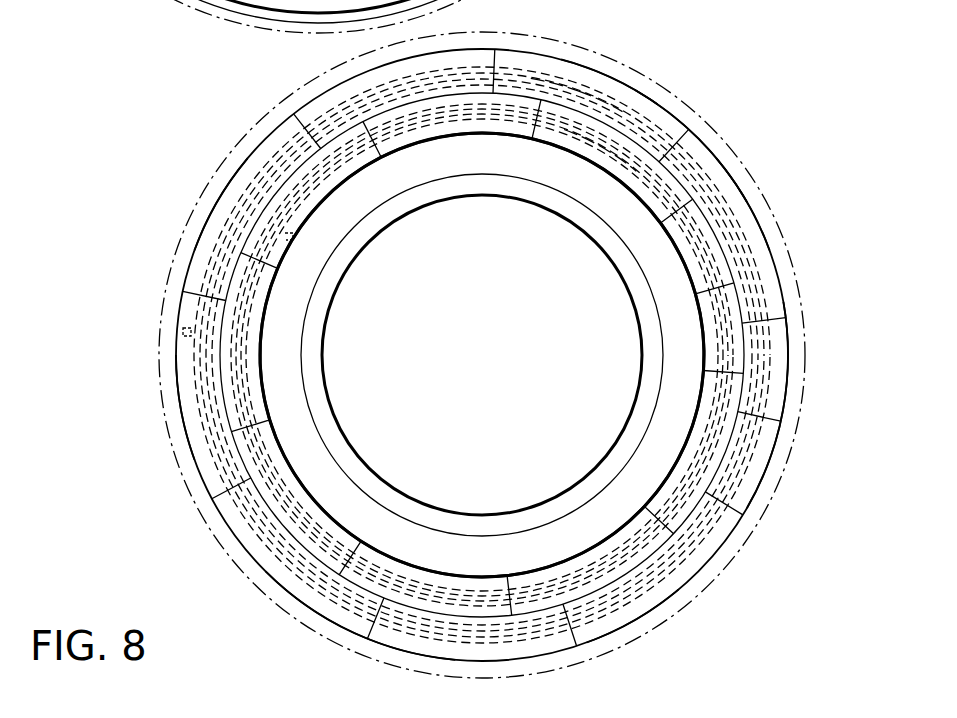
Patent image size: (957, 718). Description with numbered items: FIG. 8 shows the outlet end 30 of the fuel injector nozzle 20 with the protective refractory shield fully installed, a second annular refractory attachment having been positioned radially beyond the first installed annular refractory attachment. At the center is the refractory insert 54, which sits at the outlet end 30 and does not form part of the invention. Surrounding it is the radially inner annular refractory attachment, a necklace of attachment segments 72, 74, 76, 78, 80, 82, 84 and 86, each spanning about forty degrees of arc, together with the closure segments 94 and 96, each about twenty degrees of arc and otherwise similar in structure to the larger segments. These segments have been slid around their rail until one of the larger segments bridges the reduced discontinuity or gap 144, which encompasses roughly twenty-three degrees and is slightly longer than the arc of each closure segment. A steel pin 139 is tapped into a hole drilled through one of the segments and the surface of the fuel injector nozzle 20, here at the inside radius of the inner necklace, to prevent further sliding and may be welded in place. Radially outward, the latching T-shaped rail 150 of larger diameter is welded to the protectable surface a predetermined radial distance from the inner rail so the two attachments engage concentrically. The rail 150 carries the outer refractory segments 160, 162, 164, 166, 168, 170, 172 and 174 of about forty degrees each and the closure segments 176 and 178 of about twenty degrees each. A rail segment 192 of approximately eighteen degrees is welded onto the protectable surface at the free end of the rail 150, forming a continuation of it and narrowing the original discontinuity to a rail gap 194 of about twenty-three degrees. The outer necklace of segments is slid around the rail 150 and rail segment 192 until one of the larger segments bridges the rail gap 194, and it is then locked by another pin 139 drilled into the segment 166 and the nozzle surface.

The fuel injector nozzle 20 is at (183, 90).
The outlet end 30 is at (700, 112).
The refractory insert 54 is at (528, 548).
The segment 72 is at (688, 430).
The segment 74 is at (618, 520).
The segment 76 is at (485, 572).
The segment 78 is at (315, 500).
The segment 80 is at (263, 360).
The segment 82 is at (358, 185).
The segment 84 is at (422, 150).
The segment 86 is at (610, 180).
The closure segment 94 is at (668, 238).
The closure segment 96 is at (695, 345).
The steel pin 139 is at (183, 333).
The gap 144 is at (592, 143).
The T-shaped rail 150 is at (712, 157).
The refractory segment 160 is at (650, 617).
The refractory segment 162 is at (398, 660).
The refractory segment 164 is at (290, 600).
The refractory segment 166 is at (175, 430).
The refractory segment 168 is at (222, 173).
The refractory segment 170 is at (300, 100).
The refractory segment 172 is at (628, 77).
The refractory segment 174 is at (758, 205).
The closure segment 176 is at (793, 357).
The closure segment 178 is at (778, 468).
The rail segment 192 is at (552, 82).
The rail gap 194 is at (588, 95).